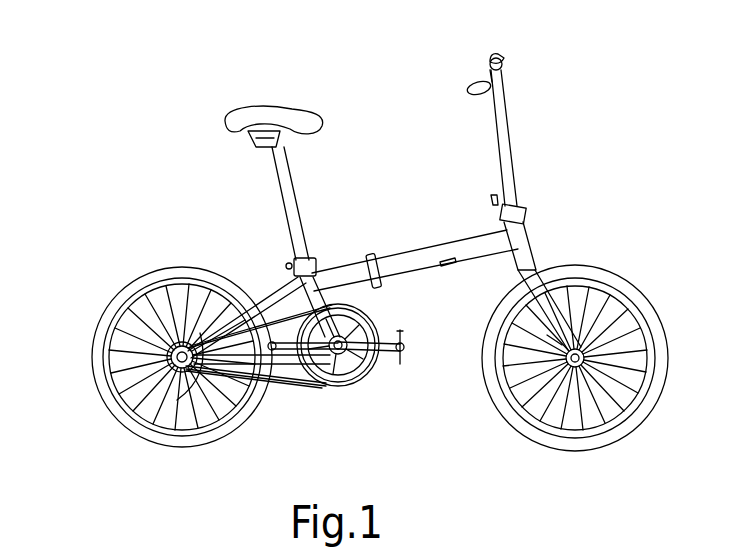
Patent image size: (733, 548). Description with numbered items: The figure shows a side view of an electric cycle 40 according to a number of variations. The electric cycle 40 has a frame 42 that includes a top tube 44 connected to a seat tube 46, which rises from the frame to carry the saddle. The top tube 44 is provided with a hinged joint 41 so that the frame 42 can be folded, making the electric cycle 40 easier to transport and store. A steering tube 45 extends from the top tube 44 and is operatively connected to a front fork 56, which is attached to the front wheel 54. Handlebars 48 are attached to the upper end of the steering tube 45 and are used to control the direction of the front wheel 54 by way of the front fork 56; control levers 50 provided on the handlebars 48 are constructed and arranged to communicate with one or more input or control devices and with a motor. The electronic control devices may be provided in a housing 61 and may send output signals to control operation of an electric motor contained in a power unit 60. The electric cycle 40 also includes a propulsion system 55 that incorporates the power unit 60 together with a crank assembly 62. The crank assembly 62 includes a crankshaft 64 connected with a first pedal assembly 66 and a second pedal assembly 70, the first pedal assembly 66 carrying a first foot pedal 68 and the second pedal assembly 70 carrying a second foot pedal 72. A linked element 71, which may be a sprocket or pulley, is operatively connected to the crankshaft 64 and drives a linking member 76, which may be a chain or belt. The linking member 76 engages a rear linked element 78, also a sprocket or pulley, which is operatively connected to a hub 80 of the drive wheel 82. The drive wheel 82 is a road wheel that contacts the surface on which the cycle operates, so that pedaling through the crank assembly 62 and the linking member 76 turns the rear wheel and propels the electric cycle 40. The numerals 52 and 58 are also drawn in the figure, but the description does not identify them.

The electric cycle 40 is at (195, 65).
The hinged joint 41 is at (372, 255).
The frame 42 is at (470, 250).
The top tube 44 is at (410, 257).
The steering tube 45 is at (501, 142).
The seat tube 46 is at (283, 272).
The handlebars 48 is at (505, 60).
The control levers 50 is at (472, 85).
The head tube 52 is at (508, 75).
The front wheel 54 is at (630, 292).
The propulsion system 55 is at (322, 393).
The front fork 56 is at (535, 268).
The chainring 58 is at (355, 305).
The power unit 60 is at (348, 382).
The housing 61 is at (375, 318).
The crank assembly 62 is at (352, 392).
The crankshaft 64 is at (308, 392).
The first pedal assembly 66 is at (385, 352).
The first foot pedal 68 is at (404, 348).
The second pedal assembly 70 is at (298, 385).
The linked element 71 is at (378, 372).
The second foot pedal 72 is at (290, 305).
The linking member 76 is at (288, 278).
The rear linked element 78 is at (148, 427).
The hub 80 is at (168, 359).
The drive wheel 82 is at (143, 282).